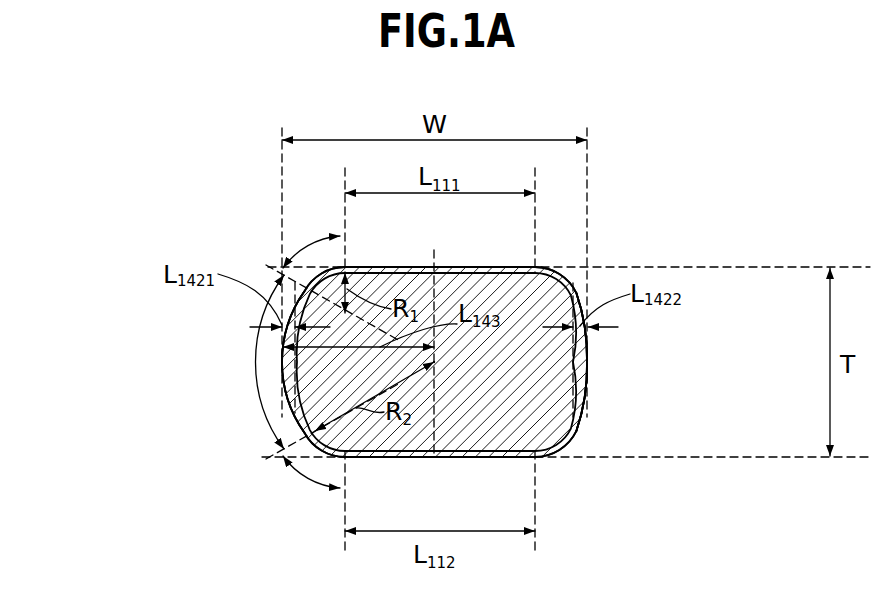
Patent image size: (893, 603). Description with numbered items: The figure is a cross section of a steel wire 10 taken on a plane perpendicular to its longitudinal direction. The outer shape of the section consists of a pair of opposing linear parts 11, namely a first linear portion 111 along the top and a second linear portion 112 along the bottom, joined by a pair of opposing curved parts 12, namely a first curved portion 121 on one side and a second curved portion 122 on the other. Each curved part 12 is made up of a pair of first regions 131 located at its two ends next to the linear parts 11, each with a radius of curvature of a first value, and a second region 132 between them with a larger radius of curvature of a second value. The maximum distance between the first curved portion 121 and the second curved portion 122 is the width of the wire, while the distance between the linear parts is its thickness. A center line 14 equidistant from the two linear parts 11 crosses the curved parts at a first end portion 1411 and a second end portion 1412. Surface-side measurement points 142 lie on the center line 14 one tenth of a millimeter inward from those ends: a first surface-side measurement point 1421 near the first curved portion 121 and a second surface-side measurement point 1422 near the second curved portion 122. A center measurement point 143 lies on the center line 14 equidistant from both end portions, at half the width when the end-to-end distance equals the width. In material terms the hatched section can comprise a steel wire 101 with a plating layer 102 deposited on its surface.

The steel wire 10 is at (101, 192).
The steel wire 101 is at (552, 413).
The plating layer 102 is at (580, 392).
The linear part 11 is at (440, 360).
The first linear portion 111 is at (535, 258).
The second linear portion 112 is at (535, 462).
The curved part 12 is at (475, 406).
The first curved portion 121 is at (323, 459).
The second curved portion 122 is at (568, 453).
The center line 14 is at (612, 362).
The first region 131 is at (310, 243).
The second region 132 is at (271, 422).
The first end portion 1411 is at (277, 374).
The second end portion 1412 is at (596, 358).
The surface-side measurement point 142 is at (404, 367).
The first surface-side measurement point 1421 is at (292, 374).
The second surface-side measurement point 1422 is at (577, 355).
The center measurement point 143 is at (441, 357).